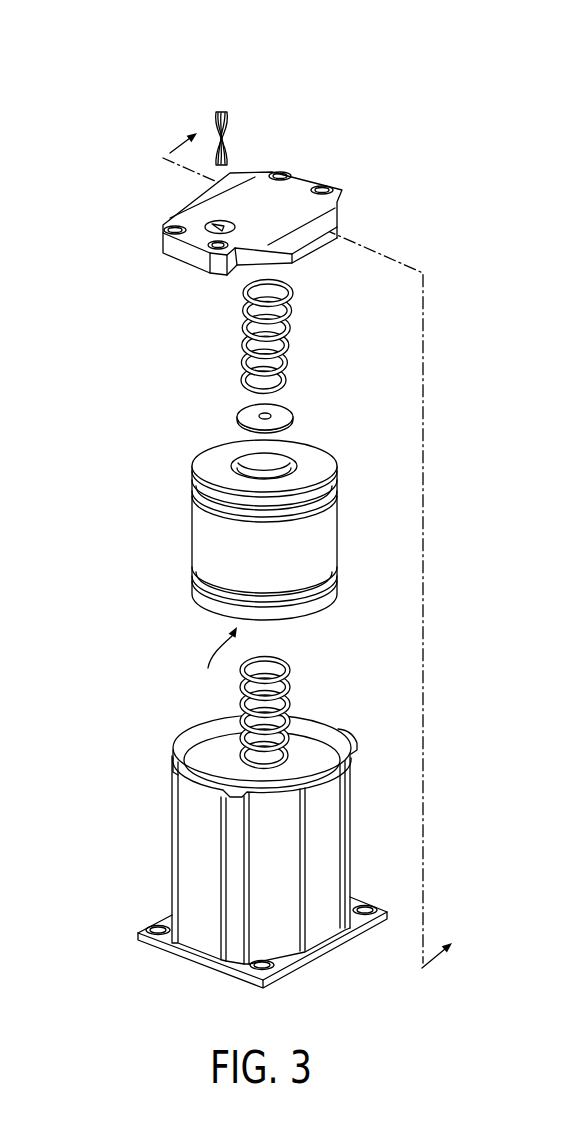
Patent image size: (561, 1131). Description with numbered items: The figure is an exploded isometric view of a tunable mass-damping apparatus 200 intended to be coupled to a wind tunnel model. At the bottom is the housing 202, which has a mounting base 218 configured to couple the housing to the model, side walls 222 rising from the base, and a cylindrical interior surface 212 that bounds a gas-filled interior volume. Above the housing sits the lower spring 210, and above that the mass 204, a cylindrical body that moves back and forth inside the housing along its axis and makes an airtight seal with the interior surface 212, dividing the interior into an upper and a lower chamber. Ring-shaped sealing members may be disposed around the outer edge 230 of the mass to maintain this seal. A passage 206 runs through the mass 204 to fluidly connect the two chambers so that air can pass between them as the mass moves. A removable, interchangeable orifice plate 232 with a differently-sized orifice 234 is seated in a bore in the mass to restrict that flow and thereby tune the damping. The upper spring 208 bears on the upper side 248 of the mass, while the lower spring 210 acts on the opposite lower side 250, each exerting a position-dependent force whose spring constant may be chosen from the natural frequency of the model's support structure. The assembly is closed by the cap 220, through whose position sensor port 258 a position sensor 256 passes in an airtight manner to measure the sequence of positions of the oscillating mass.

The mass-damping apparatus 200 is at (101, 81).
The housing 202 is at (262, 849).
The mass 204 is at (257, 501).
The passage 206 is at (266, 450).
The upper spring 208 is at (290, 320).
The lower spring 210 is at (290, 668).
The interior surface 212 is at (305, 757).
The mounting base 218 is at (355, 918).
The cap 220 is at (229, 222).
The side walls 222 is at (327, 838).
The outer edge 230 is at (323, 538).
The orifice plate 232 is at (276, 376).
The orifice 234 is at (253, 396).
The upper side 248 is at (209, 446).
The lower side 250 is at (216, 663).
The position sensor 256 is at (228, 130).
The position sensor port 258 is at (210, 226).